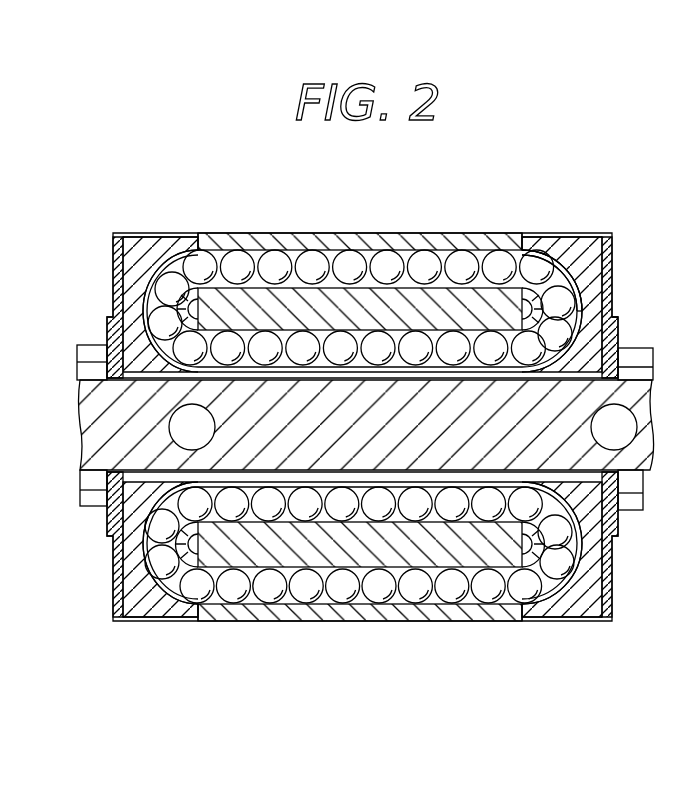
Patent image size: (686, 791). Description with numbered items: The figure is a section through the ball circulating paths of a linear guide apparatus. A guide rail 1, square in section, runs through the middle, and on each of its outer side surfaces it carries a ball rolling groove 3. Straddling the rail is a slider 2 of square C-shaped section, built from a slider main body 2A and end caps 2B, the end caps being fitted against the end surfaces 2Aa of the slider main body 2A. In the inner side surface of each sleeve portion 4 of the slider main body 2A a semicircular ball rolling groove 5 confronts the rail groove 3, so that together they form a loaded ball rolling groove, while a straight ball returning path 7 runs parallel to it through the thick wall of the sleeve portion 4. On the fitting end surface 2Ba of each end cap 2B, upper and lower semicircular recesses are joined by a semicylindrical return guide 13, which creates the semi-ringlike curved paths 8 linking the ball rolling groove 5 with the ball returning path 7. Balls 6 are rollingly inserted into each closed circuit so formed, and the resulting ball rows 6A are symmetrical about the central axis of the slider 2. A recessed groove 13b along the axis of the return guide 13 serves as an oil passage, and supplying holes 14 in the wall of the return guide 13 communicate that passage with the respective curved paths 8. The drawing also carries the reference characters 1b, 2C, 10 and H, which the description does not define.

The guide rail 1 is at (85, 440).
The shaft shoulder portion 1b is at (632, 511).
The slider 2 is at (232, 226).
The slider main body 2A is at (452, 247).
The end surfaces 2Aa is at (192, 622).
The end caps 2B is at (157, 242).
The fitting end surface 2Ba is at (205, 237).
The lower body portion 2C is at (108, 594).
The ball rolling groove 3 is at (92, 348).
The sleeve portion 4 is at (300, 622).
The ball rolling groove 5 is at (377, 343).
The balls 6 is at (316, 262).
The ball rows 6A is at (452, 603).
The ball returning path 7 is at (492, 368).
The curved paths 8 is at (118, 272).
The lower side wall 10 is at (108, 558).
The return guide 13 is at (565, 278).
The recessed groove 13b is at (557, 298).
The clearance height H is at (557, 310).
The supplying holes 14 is at (620, 338).